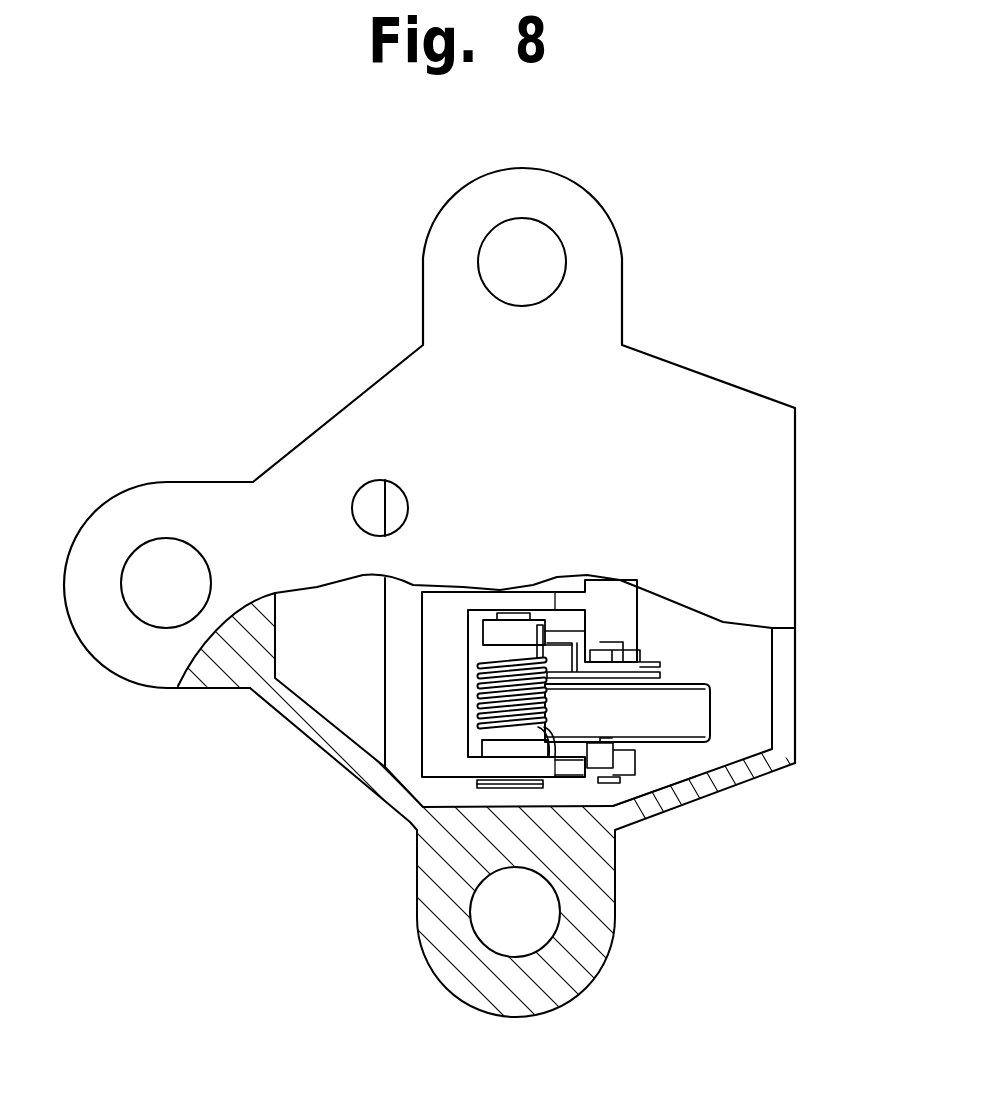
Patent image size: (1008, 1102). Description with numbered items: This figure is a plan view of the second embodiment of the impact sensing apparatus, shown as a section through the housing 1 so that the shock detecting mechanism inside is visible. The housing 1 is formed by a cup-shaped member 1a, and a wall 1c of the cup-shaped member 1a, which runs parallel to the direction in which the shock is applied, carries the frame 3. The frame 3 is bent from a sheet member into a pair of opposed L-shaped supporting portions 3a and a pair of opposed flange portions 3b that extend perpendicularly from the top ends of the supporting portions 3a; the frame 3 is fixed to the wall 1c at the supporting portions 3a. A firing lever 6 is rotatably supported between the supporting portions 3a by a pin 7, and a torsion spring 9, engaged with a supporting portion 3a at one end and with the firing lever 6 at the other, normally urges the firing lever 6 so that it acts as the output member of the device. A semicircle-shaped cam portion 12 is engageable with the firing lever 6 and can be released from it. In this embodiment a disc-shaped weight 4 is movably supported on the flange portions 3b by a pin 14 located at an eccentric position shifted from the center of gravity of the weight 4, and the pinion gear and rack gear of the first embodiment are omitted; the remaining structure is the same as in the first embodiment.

The housing 1 is at (695, 808).
The cup-shaped member 1a is at (783, 740).
The wall 1c is at (673, 377).
The frame 3 is at (420, 661).
The supporting portions 3a is at (433, 700).
The flange portions 3b is at (697, 776).
The weight 4 is at (698, 707).
The firing lever 6 is at (643, 677).
The pin 7 is at (503, 787).
The torsion spring 9 is at (505, 698).
The cam portion 12 is at (645, 666).
The pin 14 is at (603, 760).